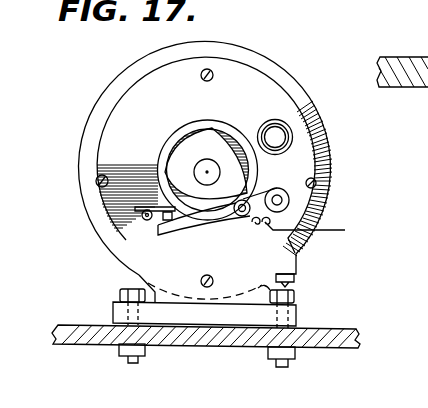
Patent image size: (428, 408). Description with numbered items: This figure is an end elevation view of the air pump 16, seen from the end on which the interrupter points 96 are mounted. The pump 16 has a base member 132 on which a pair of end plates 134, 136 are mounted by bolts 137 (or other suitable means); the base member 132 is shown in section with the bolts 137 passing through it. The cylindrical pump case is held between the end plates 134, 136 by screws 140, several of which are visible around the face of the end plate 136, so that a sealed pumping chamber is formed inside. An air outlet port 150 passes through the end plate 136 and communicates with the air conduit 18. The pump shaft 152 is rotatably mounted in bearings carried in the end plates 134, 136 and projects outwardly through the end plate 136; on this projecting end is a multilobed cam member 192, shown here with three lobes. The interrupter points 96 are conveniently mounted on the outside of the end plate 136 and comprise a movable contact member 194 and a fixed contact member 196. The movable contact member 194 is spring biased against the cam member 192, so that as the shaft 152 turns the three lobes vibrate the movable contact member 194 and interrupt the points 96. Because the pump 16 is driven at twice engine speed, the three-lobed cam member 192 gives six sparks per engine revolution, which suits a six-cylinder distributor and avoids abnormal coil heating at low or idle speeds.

The pump 16 is at (241, 44).
The air conduit 18 is at (291, 138).
The interrupter points 96 is at (149, 230).
The base member 132 is at (352, 333).
The end plate 134 is at (427, 37).
The end plate 136 is at (312, 159).
The bolts 137 is at (120, 294).
The screws 140 is at (97, 182).
The air outlet port 150 is at (277, 143).
The pump shaft 152 is at (206, 171).
The multilobed cam member 192 is at (216, 128).
The movable contact member 194 is at (219, 233).
The fixed contact member 196 is at (154, 206).